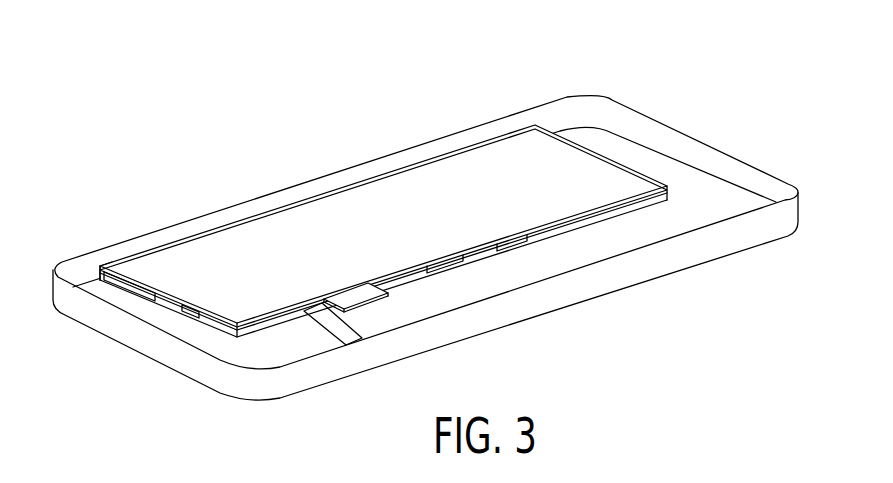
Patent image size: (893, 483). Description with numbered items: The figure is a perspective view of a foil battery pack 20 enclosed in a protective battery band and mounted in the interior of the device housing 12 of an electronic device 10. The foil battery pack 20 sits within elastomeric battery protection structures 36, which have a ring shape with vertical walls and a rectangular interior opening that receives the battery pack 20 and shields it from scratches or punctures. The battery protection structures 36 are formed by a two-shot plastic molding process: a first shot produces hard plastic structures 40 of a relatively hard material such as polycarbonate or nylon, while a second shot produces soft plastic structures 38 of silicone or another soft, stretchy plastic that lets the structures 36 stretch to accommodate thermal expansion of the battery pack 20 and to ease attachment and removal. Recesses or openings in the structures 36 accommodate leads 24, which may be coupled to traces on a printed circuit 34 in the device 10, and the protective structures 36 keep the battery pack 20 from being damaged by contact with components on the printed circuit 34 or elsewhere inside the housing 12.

The device 10 is at (418, 220).
The device housing 12 is at (425, 241).
The foil battery pack 20 is at (353, 235).
The leads 24 is at (360, 292).
The printed circuit 34 is at (588, 251).
The battery protection structures 36 is at (93, 260).
The soft plastic structures 38 is at (160, 295).
The hard plastic structures 40 is at (193, 316).